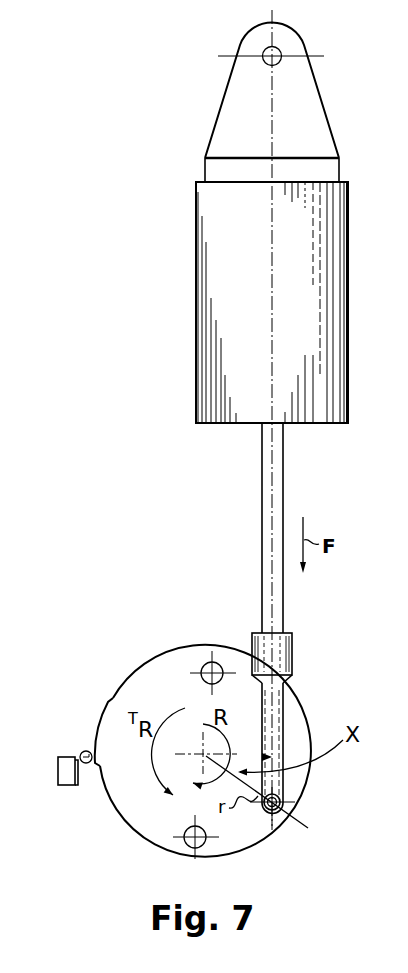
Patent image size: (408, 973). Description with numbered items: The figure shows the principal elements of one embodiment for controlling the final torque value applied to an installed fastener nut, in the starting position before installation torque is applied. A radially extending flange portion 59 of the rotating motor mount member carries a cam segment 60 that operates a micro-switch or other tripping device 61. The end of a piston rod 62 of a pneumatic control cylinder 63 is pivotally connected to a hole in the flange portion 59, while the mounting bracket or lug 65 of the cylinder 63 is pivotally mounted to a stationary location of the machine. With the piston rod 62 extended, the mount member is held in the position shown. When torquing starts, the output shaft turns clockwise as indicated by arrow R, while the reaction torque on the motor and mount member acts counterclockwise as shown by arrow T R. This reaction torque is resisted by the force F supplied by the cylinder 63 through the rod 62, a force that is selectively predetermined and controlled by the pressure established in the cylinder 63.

The flange portion 59 is at (132, 832).
The cam segment 60 is at (100, 716).
The tripping device 61 is at (68, 757).
The piston rod 62 is at (285, 784).
The pneumatic control cylinder 63 is at (348, 348).
The mounting bracket or lug 65 is at (325, 102).